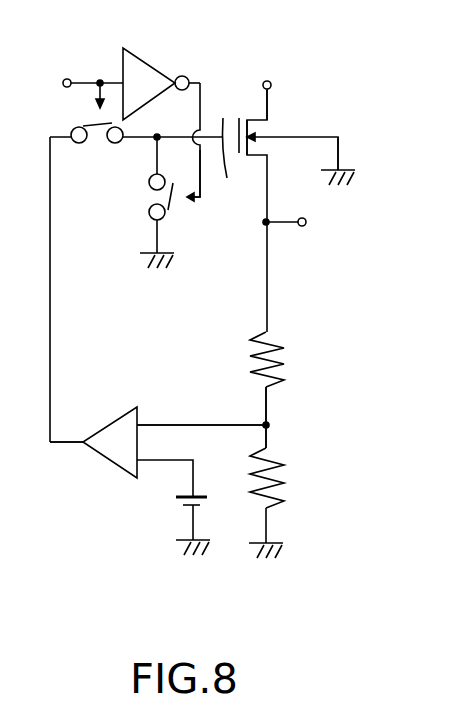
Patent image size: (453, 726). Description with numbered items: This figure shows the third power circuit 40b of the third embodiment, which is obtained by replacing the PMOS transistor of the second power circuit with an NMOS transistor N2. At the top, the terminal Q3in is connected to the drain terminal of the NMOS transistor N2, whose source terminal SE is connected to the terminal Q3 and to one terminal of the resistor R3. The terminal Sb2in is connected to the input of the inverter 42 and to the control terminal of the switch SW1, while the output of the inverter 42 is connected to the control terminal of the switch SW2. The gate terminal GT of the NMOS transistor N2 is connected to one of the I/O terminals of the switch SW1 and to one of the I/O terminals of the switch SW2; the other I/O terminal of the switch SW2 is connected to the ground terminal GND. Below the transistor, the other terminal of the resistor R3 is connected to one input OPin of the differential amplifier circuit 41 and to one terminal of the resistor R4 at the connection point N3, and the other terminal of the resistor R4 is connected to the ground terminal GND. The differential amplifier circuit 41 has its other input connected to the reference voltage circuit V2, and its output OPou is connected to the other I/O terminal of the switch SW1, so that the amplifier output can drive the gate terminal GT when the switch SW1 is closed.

The third power circuit 40b is at (293, 30).
The inverter 42 is at (157, 62).
The differential amplifier circuit 41 is at (117, 465).
The terminal Sb2in is at (76, 76).
The terminal Q3in is at (265, 82).
The terminal Q3 is at (316, 223).
The NMOS transistor N2 is at (268, 131).
The source terminal SE is at (328, 120).
The gate terminal GT is at (218, 182).
The switch SW1 is at (102, 143).
The switch SW2 is at (168, 210).
The resistor R3 is at (273, 333).
The node N3 is at (273, 403).
The resistor R4 is at (272, 450).
The ground terminal GND is at (310, 531).
The operational amplifier output OPou is at (57, 423).
The input OPin is at (147, 407).
The reference voltage circuit V2 is at (205, 508).